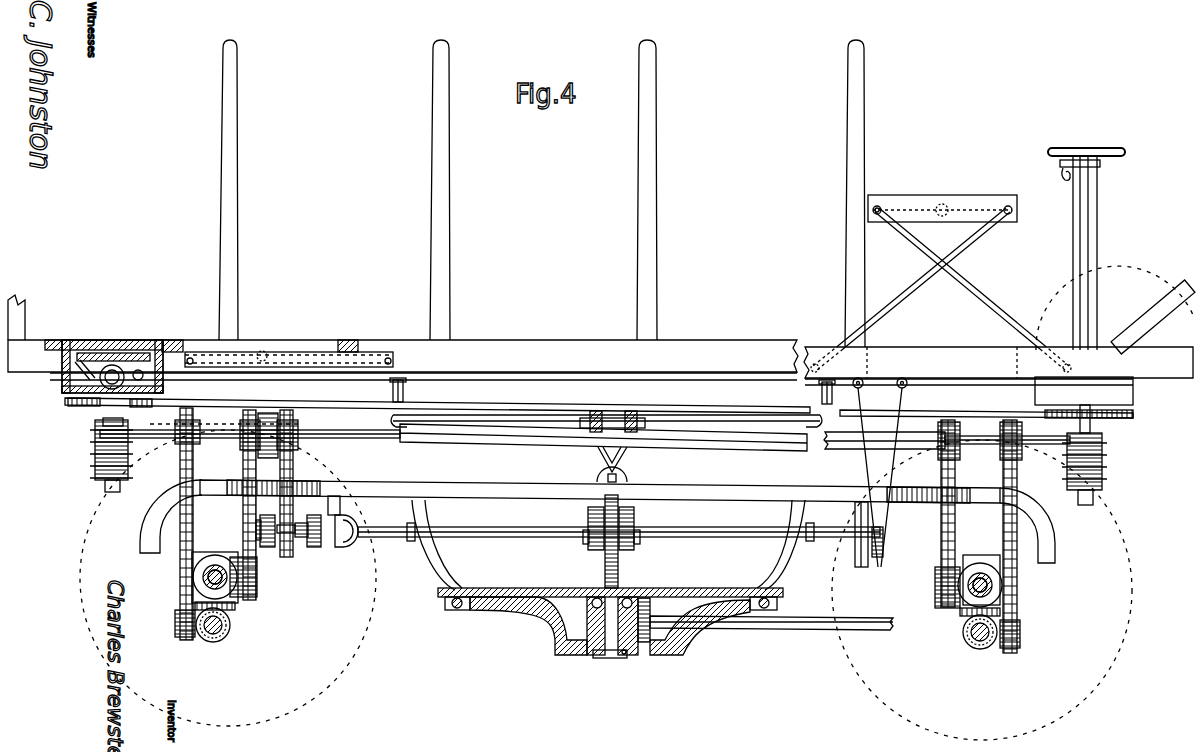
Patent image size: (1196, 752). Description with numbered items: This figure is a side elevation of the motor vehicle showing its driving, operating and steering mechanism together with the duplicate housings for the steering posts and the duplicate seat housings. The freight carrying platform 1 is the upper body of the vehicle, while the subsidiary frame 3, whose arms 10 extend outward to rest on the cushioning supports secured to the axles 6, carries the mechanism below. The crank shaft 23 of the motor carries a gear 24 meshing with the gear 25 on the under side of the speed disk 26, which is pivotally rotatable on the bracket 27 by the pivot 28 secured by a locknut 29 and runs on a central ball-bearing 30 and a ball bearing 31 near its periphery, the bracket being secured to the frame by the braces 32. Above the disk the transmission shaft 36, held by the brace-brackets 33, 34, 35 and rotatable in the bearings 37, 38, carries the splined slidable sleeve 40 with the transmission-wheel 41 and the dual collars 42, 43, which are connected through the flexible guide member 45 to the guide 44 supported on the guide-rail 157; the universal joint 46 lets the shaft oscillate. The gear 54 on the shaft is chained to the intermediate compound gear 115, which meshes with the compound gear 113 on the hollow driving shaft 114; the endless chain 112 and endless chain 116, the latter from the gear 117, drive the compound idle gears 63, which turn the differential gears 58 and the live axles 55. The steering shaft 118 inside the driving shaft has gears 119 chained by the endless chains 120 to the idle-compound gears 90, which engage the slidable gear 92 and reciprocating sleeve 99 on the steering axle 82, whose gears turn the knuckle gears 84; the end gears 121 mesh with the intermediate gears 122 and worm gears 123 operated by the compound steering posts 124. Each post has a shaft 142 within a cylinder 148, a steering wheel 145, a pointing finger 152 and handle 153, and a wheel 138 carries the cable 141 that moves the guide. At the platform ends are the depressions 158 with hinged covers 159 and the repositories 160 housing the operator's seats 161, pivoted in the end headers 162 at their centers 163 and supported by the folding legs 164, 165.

The freight carrying platform 1 is at (600, 340).
The subsidiary frame 3 is at (597, 521).
The axle 6 is at (208, 570).
The arm 10 is at (598, 492).
The crank shaft 23 is at (771, 618).
The gear 24 is at (694, 626).
The gear 25 is at (582, 597).
The speed disk 26 is at (610, 585).
The bracket 27 is at (548, 607).
The pivot 28 is at (610, 664).
The locknut 29 is at (625, 654).
The central ball-bearing 30 is at (632, 590).
The ball bearing 31 is at (455, 610).
The brace 32 is at (445, 560).
The brace-bracket 33 is at (266, 521).
The brace-bracket 34 is at (315, 506).
The brace-bracket 35 is at (880, 479).
The transmission shaft 36 is at (578, 526).
The bearing 37 is at (267, 537).
The bearing 38 is at (317, 538).
The splined slidable sleeve 40 is at (634, 522).
The transmission-wheel 41 is at (621, 541).
The collar 42 is at (634, 552).
The collar 43 is at (593, 548).
The guide 44 is at (610, 418).
The flexible guide member 45 is at (625, 463).
The universal joint 46 is at (348, 539).
The gear 54 is at (294, 548).
The live axle 55 is at (216, 565).
The differential gear 58 is at (193, 572).
The compound idle gear 63 is at (257, 578).
The steering axle 82 is at (230, 625).
The gear 84 is at (235, 606).
The idle-compound gear 90 is at (176, 625).
The slidable gear 92 is at (218, 634).
The reciprocating sleeve 99 is at (883, 550).
The endless chain 112 is at (243, 506).
The compound gear 113 is at (240, 455).
The hollow driving shaft 114 is at (458, 442).
The intermediate compound gear 115 is at (293, 452).
The endless chain 116 is at (941, 531).
The gear 117 is at (942, 458).
The steering shaft 118 is at (218, 438).
The gear 119 is at (180, 443).
The endless chain 120 is at (180, 578).
The gear 121 is at (103, 421).
The intermediate gear 122 is at (112, 492).
The worm gear 123 is at (95, 455).
The compound steering post 124 is at (1097, 240).
The wheel 138 is at (133, 406).
The cable 141 is at (66, 403).
The shaft 142 is at (92, 347).
The steering wheel 145 is at (147, 357).
The cylinder 148 is at (103, 353).
The pointing finger 152 is at (143, 376).
The handle 153 is at (1060, 177).
The guide-rail 157 is at (405, 392).
The depression 158 is at (62, 380).
The hinged cover 159 is at (112, 365).
The repository 160 is at (258, 350).
The operator's seat 161 is at (330, 350).
The end header 162 is at (877, 215).
The center 163 is at (942, 216).
The supporting folding leg 164 is at (916, 293).
The supporting folding leg 165 is at (978, 302).